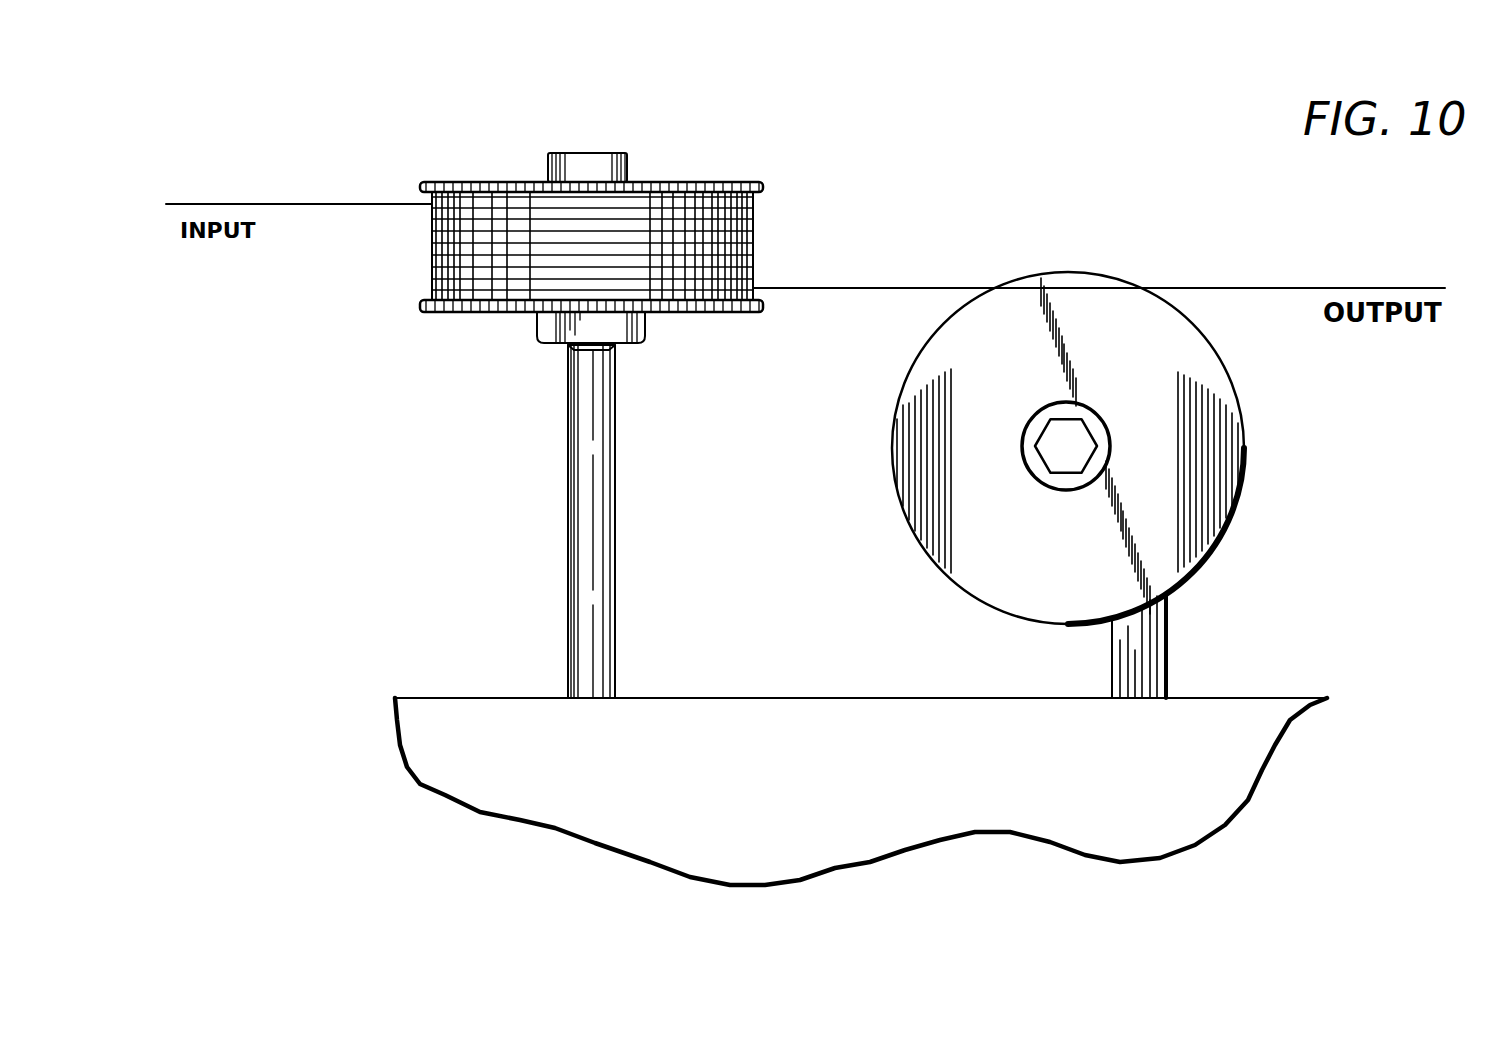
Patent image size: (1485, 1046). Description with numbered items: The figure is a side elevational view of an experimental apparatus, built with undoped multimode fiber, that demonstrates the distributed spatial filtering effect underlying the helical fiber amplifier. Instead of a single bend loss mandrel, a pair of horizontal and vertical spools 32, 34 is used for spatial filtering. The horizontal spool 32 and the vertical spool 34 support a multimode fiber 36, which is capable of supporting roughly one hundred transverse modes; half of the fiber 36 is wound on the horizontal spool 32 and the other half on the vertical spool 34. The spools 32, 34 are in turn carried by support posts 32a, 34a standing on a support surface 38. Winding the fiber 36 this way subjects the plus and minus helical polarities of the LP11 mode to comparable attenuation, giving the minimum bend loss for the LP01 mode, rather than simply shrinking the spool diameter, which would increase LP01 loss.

The horizontal spool 32 is at (710, 182).
The support post 32a is at (596, 494).
The vertical spool 34 is at (905, 452).
The support post 34a is at (1145, 622).
The multimode fiber 36 is at (307, 204).
The support surface 38 is at (893, 698).